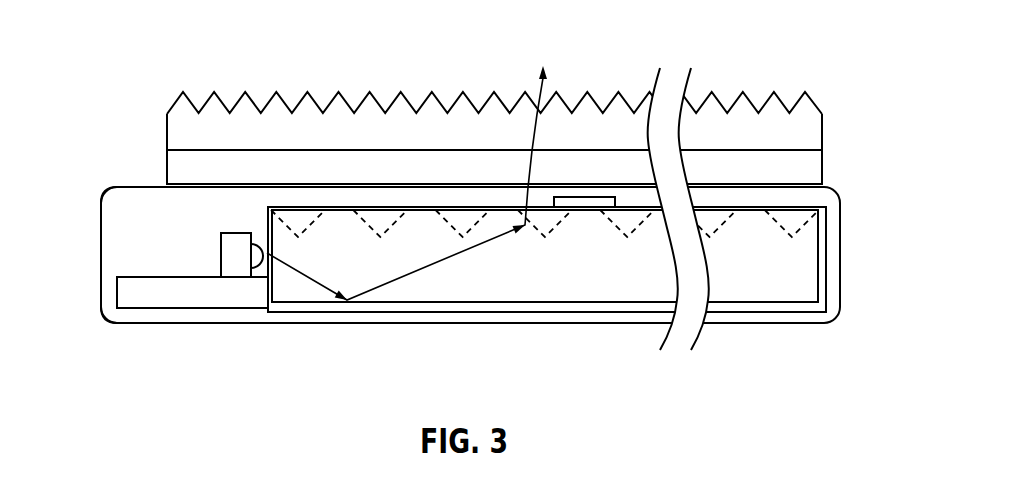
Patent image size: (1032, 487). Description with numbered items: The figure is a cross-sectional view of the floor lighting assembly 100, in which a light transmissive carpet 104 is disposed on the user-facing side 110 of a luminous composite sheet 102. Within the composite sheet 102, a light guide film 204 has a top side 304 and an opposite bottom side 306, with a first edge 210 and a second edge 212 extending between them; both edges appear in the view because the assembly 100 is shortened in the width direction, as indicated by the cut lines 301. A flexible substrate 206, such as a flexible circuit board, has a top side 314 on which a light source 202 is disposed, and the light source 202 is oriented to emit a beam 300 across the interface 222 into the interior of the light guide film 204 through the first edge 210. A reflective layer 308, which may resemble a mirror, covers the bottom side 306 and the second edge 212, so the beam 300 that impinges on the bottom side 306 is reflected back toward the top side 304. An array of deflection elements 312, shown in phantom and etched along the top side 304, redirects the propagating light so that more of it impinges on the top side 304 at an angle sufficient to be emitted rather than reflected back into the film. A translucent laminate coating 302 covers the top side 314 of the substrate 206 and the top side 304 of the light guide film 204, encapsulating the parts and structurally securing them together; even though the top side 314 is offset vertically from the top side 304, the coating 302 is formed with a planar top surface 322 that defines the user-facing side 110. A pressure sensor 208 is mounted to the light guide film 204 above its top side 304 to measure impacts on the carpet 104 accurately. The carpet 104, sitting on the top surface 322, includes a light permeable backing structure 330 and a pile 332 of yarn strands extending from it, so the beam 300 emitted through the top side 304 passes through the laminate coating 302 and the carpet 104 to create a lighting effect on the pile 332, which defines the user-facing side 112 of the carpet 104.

The floor lighting assembly 100 is at (476, 196).
The composite sheet 102 is at (842, 190).
The light transmissive carpet 104 is at (541, 111).
The user-facing side 110 is at (147, 185).
The user-facing side 112 is at (561, 97).
The light source 202 is at (237, 267).
The light guide film 204 is at (500, 272).
The substrate 206 is at (136, 292).
The pressure sensor 208 is at (584, 207).
The first edge 210 is at (268, 221).
The second edge 212 is at (820, 268).
The interface 222 is at (268, 195).
The beam 300 is at (543, 88).
The cut lines 301 is at (698, 334).
The laminate coating 302 is at (125, 200).
The top side 304 is at (420, 208).
The bottom side 306 is at (448, 297).
The reflective layer 308 is at (826, 290).
The deflection elements 312 is at (367, 222).
The top side 314 is at (192, 278).
The top surface 322 is at (611, 185).
The backing structure 330 is at (753, 170).
The pile 332 is at (712, 123).